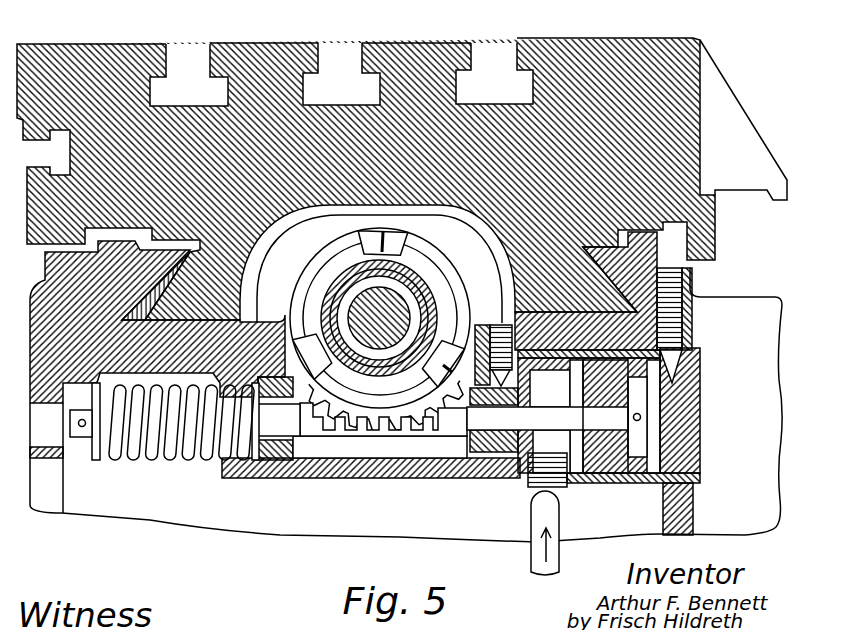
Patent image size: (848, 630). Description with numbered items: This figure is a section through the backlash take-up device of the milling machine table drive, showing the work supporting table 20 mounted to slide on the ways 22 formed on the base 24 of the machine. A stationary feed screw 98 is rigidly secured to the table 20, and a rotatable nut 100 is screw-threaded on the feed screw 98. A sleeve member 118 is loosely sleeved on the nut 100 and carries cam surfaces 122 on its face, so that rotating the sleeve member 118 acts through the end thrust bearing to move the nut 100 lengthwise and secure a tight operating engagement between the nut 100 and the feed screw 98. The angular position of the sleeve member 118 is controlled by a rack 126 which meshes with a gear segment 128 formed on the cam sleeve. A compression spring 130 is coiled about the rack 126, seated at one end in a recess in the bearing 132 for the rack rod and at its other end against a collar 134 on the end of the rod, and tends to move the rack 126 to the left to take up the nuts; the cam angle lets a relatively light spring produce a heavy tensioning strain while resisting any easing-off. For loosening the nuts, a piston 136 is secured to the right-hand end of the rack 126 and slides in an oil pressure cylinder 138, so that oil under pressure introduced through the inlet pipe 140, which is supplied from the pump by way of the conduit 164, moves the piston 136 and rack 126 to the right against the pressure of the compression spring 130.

The work supporting table 20 is at (130, 24).
The ways 22 is at (232, 312).
The base 24 is at (688, 512).
The feed screw 98 is at (397, 318).
The rotatable nut 100 is at (413, 279).
The sleeve member 118 is at (460, 290).
The cam surfaces 122 is at (305, 322).
The rack 126 is at (435, 430).
The gear segment 128 is at (343, 408).
The compression spring 130 is at (177, 463).
The bearing 132 is at (293, 446).
The collar 134 is at (98, 462).
The piston 136 is at (593, 383).
The oil pressure cylinder 138 is at (580, 484).
The inlet pipe 140 is at (528, 493).
The conduit 164 is at (538, 558).